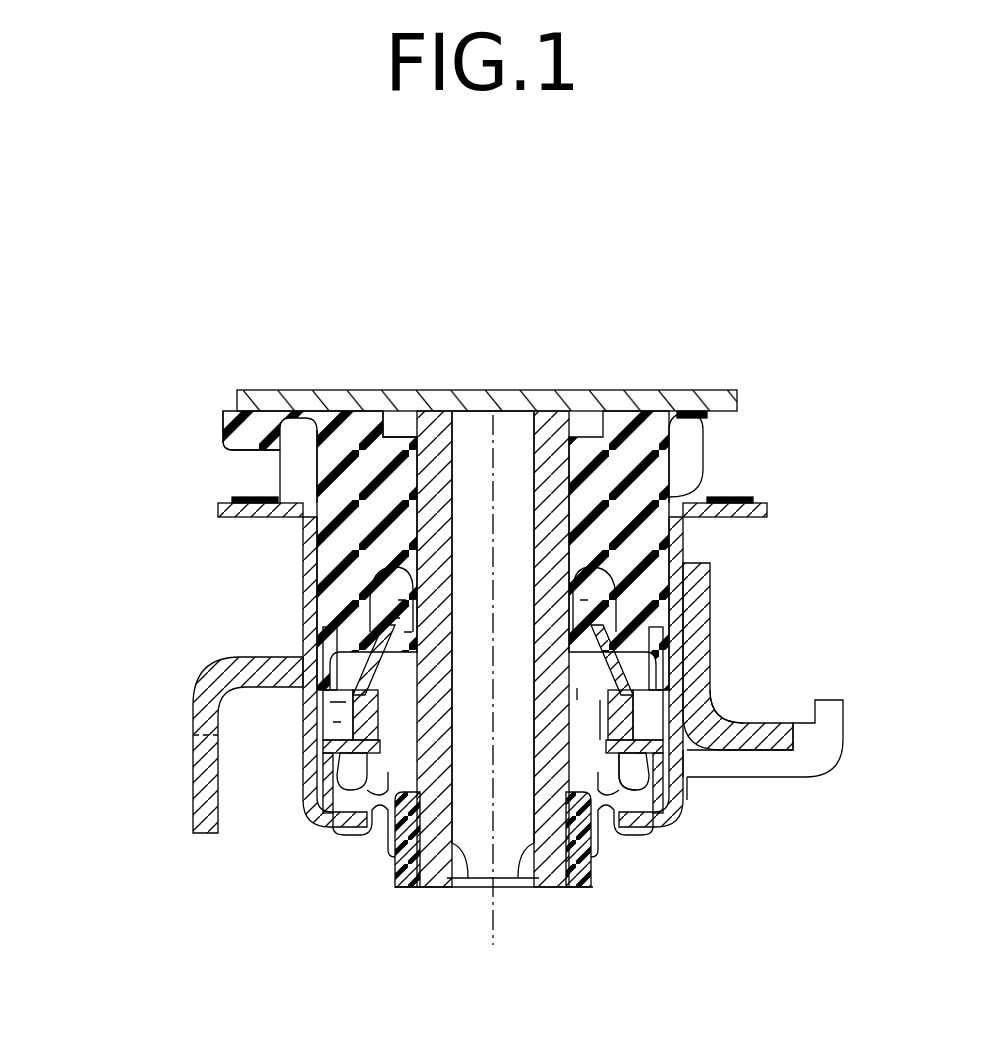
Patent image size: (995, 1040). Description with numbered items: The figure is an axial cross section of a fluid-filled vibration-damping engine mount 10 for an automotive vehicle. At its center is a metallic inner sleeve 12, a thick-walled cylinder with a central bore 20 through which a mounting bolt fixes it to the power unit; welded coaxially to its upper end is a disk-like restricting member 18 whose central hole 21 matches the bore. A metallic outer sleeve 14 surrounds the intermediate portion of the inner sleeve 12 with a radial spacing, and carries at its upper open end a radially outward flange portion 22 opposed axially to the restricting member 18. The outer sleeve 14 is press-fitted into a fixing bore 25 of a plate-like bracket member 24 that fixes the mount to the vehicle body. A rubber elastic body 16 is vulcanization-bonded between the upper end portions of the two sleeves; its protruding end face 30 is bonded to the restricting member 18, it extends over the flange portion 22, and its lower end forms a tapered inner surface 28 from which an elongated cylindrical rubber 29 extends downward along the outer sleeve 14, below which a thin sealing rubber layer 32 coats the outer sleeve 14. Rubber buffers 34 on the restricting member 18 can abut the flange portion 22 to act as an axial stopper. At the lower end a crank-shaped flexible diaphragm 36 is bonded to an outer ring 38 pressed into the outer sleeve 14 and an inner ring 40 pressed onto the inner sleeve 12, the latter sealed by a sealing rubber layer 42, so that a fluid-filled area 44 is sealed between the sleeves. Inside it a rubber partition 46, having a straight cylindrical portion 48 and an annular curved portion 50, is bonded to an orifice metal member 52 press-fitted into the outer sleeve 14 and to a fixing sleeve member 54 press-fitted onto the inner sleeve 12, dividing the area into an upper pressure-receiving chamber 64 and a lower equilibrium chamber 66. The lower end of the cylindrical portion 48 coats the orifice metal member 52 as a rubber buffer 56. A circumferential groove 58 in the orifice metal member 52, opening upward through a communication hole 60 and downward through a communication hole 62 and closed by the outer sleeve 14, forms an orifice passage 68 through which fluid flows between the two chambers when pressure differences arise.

The engine mount 10 is at (656, 310).
The inner sleeve 12 is at (550, 517).
The outer sleeve 14 is at (307, 537).
The rubber elastic body 16 is at (365, 413).
The restricting member 18 is at (703, 400).
The central bore 20 is at (470, 840).
The central hole 21 is at (460, 407).
The flange portion 22 is at (727, 515).
The bracket member 24 is at (203, 707).
The fixing bore 25 is at (683, 627).
The tapered inner surface 28 is at (633, 597).
The elongated cylindrical rubber 29 is at (687, 680).
The protruding end face 30 is at (377, 407).
The sealing rubber layer 32 is at (327, 737).
The rubber buffer 34 is at (260, 430).
The flexible diaphragm 36 is at (630, 813).
The outer ring 38 is at (687, 770).
The inner ring 40 is at (397, 880).
The sealing rubber layer 42 is at (567, 847).
The fluid-filled area 44 is at (383, 830).
The rubber partition 46 is at (380, 610).
The cylindrical portion 48 is at (317, 637).
The annular curved portion 50 is at (630, 622).
The orifice metal member 52 is at (367, 787).
The fixing sleeve member 54 is at (317, 623).
The rubber buffer 56 is at (600, 740).
The circumferential groove 58 is at (687, 703).
The communication hole 60 is at (327, 697).
The communication hole 62 is at (630, 807).
The pressure-receiving chamber 64 is at (380, 610).
The equilibrium chamber 66 is at (577, 688).
The orifice passage 68 is at (687, 753).